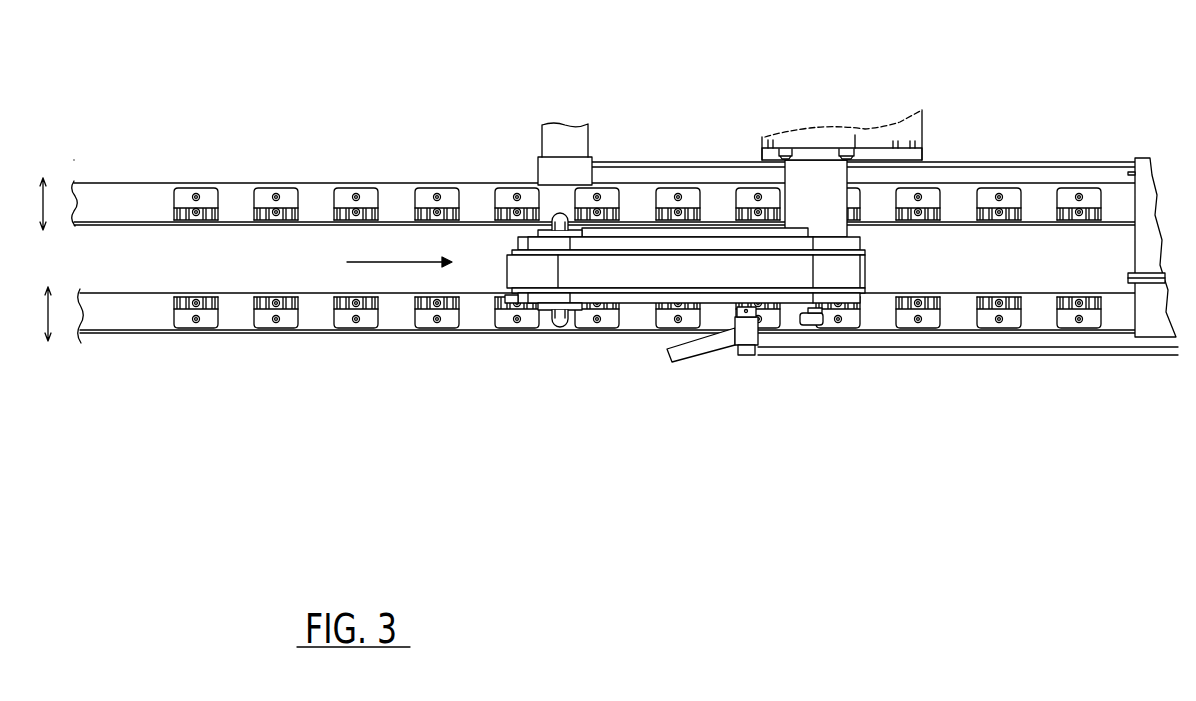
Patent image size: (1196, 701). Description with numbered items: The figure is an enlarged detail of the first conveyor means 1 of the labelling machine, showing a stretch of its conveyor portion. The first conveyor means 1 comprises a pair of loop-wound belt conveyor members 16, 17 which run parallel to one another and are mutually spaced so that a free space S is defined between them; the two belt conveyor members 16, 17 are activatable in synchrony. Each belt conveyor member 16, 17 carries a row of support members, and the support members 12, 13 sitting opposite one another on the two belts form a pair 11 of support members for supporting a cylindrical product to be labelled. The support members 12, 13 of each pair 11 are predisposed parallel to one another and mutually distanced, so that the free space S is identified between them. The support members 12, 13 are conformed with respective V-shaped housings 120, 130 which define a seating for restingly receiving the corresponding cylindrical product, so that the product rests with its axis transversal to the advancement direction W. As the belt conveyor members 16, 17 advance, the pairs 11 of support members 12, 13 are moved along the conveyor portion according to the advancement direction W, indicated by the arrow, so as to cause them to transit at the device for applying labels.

The first conveyor means 1 is at (500, 396).
The pair of support members 11 is at (579, 269).
The support member 12 is at (187, 326).
The support member 13 is at (183, 193).
The belt conveyor member 16 is at (112, 318).
The belt conveyor member 17 is at (88, 192).
The V-shaped housing 120 is at (209, 303).
The V-shaped housing 130 is at (207, 210).
The free space S is at (233, 282).
The advancement direction W is at (399, 247).